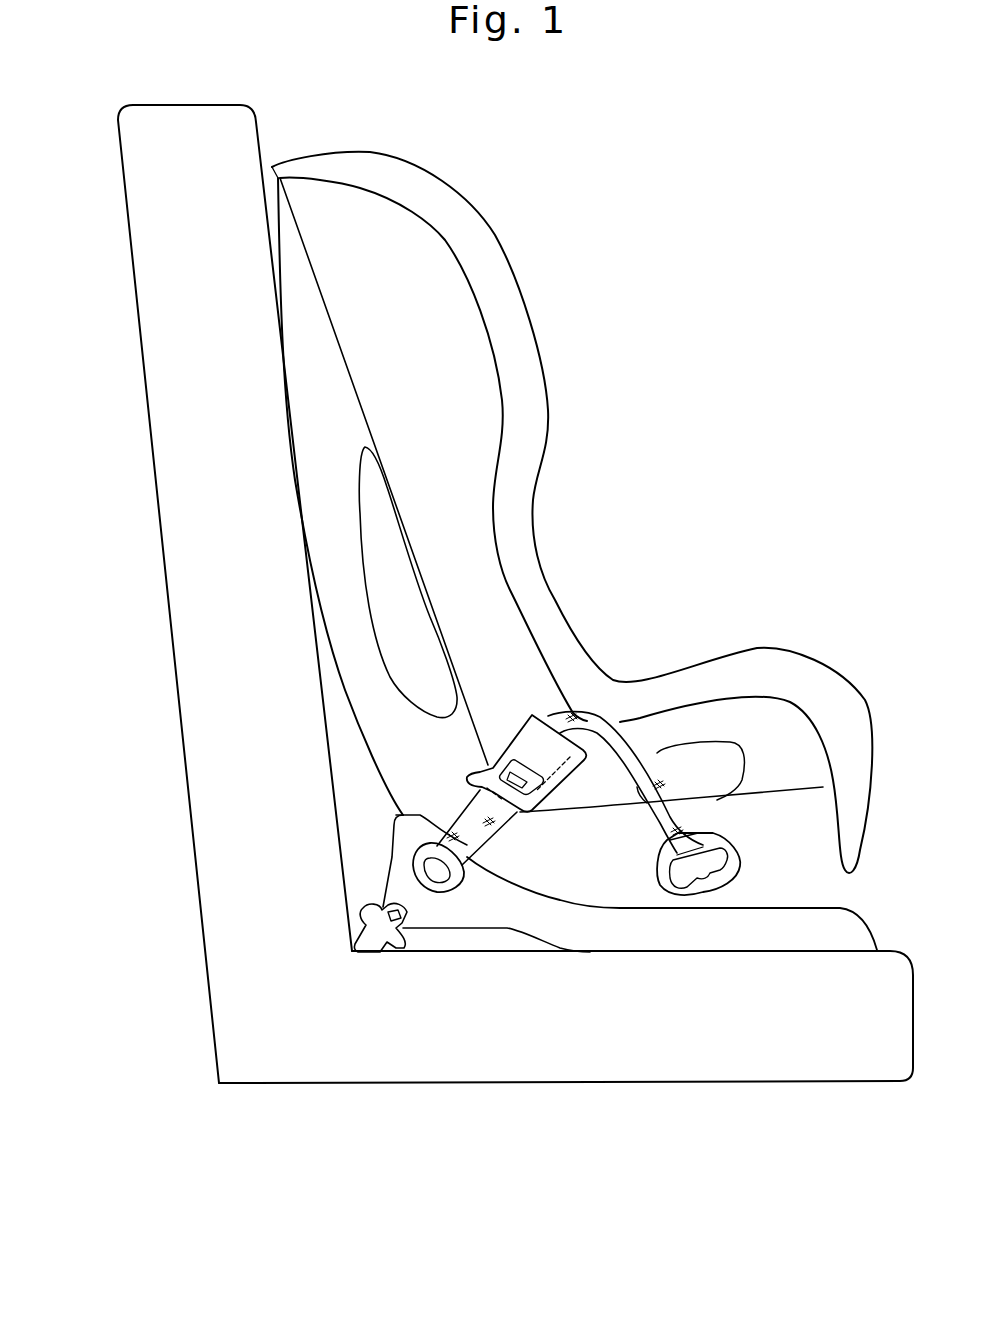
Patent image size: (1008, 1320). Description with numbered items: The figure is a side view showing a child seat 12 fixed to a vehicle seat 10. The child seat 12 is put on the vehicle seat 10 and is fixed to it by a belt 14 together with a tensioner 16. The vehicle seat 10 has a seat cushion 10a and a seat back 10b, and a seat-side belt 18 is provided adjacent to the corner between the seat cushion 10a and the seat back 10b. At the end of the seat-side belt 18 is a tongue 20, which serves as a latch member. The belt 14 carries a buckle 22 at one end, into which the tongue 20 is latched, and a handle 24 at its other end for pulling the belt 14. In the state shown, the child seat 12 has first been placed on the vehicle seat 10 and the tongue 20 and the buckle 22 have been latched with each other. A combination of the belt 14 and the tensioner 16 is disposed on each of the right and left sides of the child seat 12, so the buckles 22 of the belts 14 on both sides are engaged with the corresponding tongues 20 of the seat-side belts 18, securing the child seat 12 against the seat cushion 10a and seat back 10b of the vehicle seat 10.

The vehicle seat 10 is at (489, 660).
The seat cushion 10a is at (630, 1068).
The seat back 10b is at (180, 670).
The child seat 12 is at (545, 288).
The belt 14 is at (587, 722).
The tensioner 16 is at (517, 732).
The seat-side belt 18 is at (370, 942).
The tongue 20 is at (397, 940).
The buckle 22 is at (448, 887).
The handle 24 is at (717, 882).